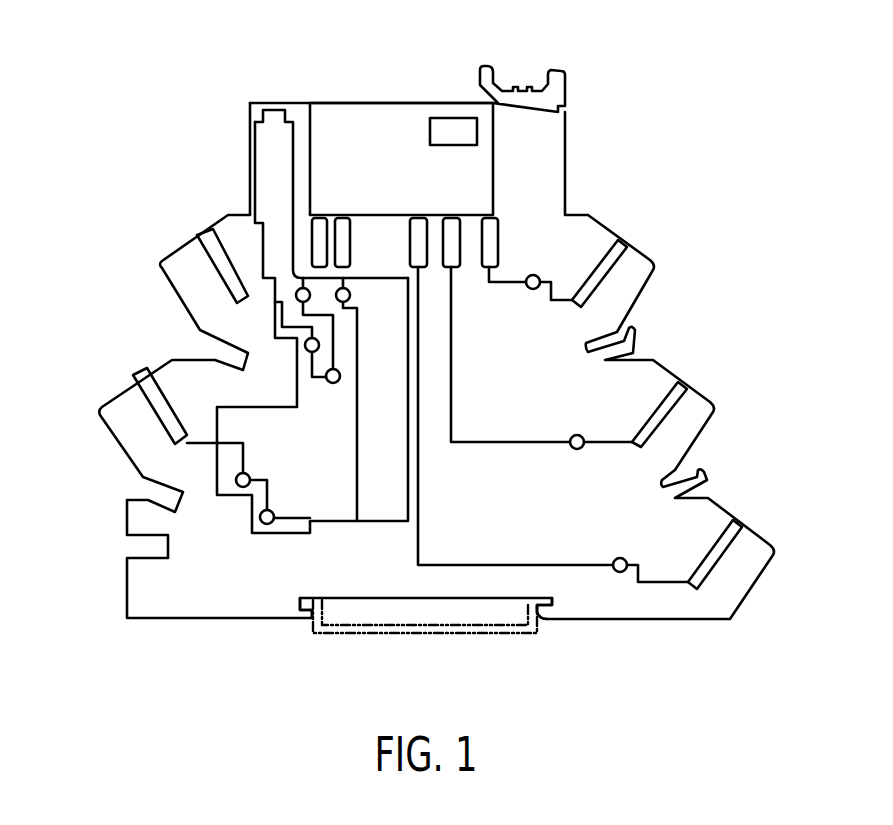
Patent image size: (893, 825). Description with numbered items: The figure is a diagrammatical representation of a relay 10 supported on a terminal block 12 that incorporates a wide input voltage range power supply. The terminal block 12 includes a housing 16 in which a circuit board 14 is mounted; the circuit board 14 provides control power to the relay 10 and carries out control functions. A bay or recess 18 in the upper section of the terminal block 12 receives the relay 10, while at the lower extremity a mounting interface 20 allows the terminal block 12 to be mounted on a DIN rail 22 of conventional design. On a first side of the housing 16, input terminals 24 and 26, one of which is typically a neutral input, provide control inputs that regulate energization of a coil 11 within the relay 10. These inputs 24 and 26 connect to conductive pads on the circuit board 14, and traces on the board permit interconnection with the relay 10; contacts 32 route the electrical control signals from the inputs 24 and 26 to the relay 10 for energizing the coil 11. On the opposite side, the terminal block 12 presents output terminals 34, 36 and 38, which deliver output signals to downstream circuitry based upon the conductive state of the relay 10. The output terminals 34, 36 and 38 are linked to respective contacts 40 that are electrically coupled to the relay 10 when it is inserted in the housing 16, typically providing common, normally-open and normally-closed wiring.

The relay 10 is at (383, 164).
The coil 11 is at (456, 118).
The terminal block 12 is at (86, 200).
The circuit board 14 is at (295, 472).
The housing 16 is at (127, 600).
The bay or recess 18 is at (313, 122).
The mounting interface 20 is at (307, 613).
The DIN rail 22 is at (428, 625).
The input terminal 24 is at (203, 243).
The input terminal 26 is at (141, 390).
The contacts 32 is at (341, 226).
The output terminal 34 is at (612, 244).
The output terminal 36 is at (674, 385).
The output terminal 38 is at (730, 528).
The contacts 40 is at (485, 228).